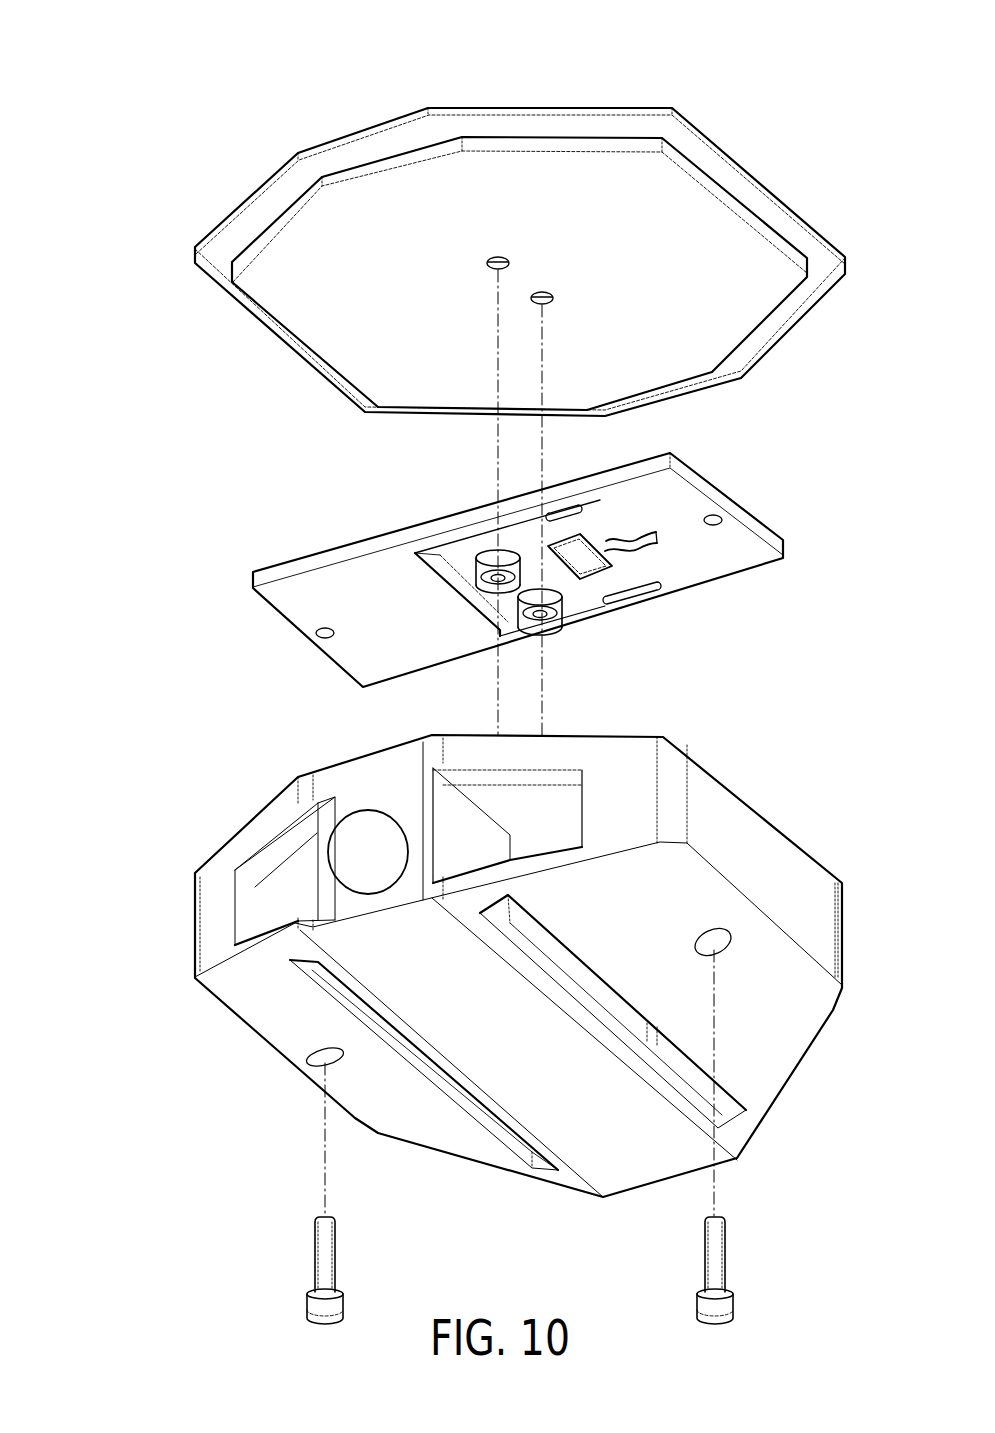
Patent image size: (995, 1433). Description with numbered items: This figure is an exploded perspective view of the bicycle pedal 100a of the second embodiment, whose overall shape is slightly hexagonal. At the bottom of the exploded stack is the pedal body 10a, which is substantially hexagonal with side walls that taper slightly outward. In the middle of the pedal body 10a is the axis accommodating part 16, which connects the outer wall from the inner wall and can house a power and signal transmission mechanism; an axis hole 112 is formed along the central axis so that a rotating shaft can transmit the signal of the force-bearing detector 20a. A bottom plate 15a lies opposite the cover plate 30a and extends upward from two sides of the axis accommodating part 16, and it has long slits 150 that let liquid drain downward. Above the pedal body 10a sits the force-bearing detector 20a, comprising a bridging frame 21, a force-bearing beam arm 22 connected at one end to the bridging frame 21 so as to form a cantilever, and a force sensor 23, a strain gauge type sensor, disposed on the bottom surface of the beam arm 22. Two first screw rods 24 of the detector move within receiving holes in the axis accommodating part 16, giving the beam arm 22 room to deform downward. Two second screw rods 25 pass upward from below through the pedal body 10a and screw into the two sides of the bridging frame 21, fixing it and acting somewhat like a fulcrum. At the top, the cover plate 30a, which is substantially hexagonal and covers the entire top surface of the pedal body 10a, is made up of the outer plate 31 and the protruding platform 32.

The bicycle pedal 100a is at (113, 82).
The cover plate 30a is at (768, 192).
The outer plate 31 is at (778, 325).
The protruding platform 32 is at (718, 335).
The force-bearing detector 20a is at (757, 522).
The bridging frame 21 is at (703, 560).
The force-bearing beam arm 22 is at (465, 560).
The force sensor 23 is at (595, 578).
The first screw rods 24 is at (552, 630).
The pedal body 10a is at (797, 853).
The axis hole 112 is at (370, 847).
The axis accommodating part 16 is at (472, 817).
The bottom plate 15a is at (797, 1027).
The long slits 150 is at (497, 1132).
The second screw rods 25 is at (335, 1257).